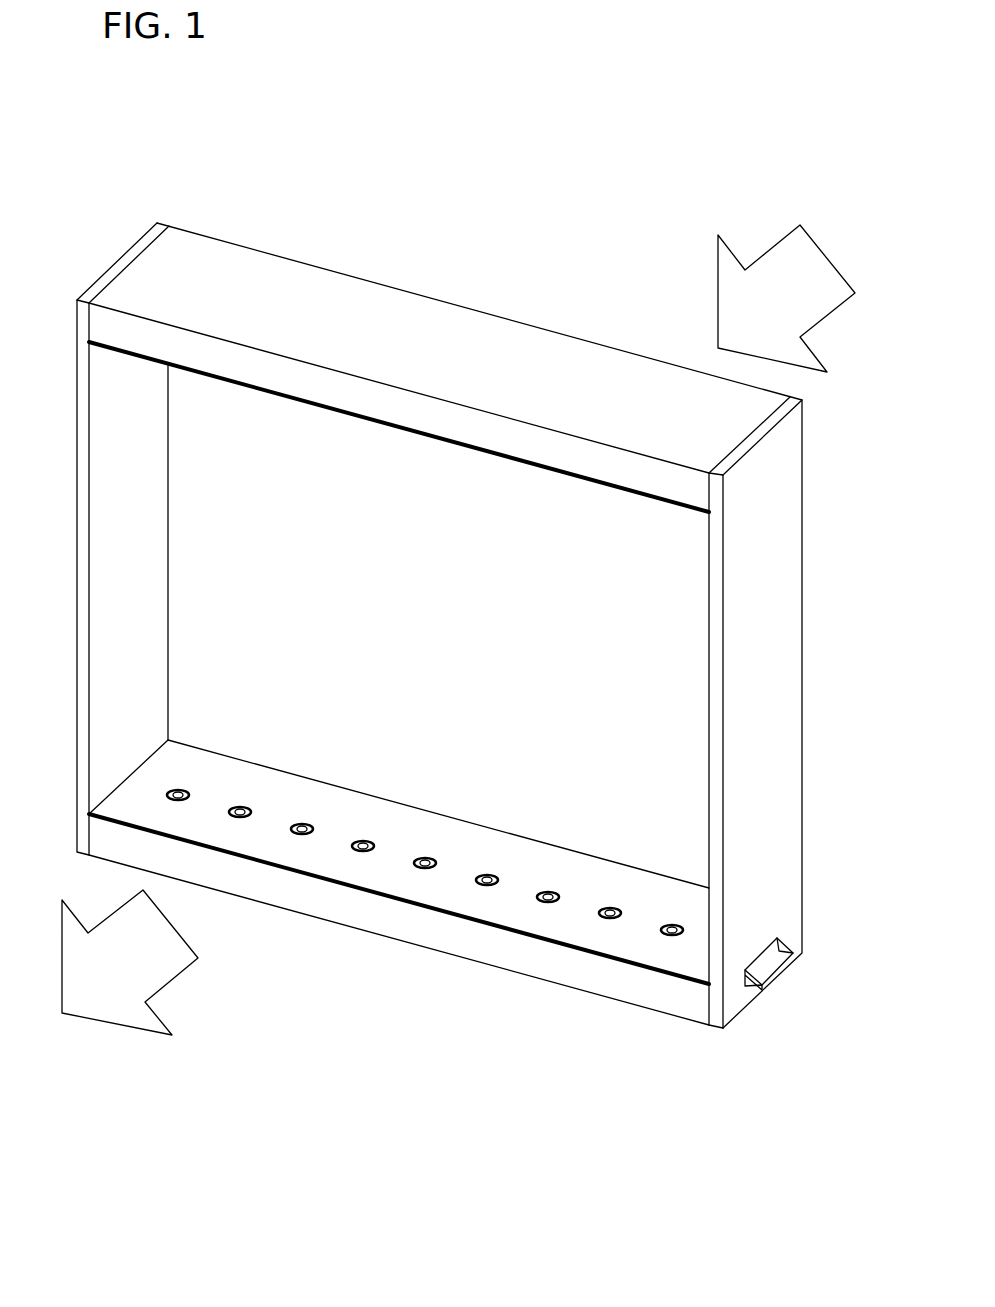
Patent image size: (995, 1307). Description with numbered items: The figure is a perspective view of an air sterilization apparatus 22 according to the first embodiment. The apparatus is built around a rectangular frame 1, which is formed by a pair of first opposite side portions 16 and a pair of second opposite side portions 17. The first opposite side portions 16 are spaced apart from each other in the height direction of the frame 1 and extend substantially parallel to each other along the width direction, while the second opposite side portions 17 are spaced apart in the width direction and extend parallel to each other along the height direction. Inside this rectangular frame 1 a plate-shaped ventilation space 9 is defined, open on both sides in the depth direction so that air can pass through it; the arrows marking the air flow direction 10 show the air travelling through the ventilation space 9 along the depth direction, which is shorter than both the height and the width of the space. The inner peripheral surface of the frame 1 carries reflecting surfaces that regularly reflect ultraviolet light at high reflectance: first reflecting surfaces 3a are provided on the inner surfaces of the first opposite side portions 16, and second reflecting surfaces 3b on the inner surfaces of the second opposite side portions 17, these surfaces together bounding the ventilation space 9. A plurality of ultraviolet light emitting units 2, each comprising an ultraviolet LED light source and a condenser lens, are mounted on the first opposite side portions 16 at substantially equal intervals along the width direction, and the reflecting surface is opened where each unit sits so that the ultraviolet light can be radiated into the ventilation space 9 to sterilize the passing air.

The frame 1 is at (405, 312).
The ultraviolet light emitting unit 2 is at (545, 914).
The first reflecting surface 3a is at (460, 847).
The second reflecting surface 3b is at (122, 628).
The ventilation space 9 is at (437, 659).
The air flow direction 10 is at (778, 268).
The first opposite side portion 16 is at (557, 372).
The second opposite side portion 17 is at (82, 416).
The air sterilization apparatus 22 is at (386, 254).